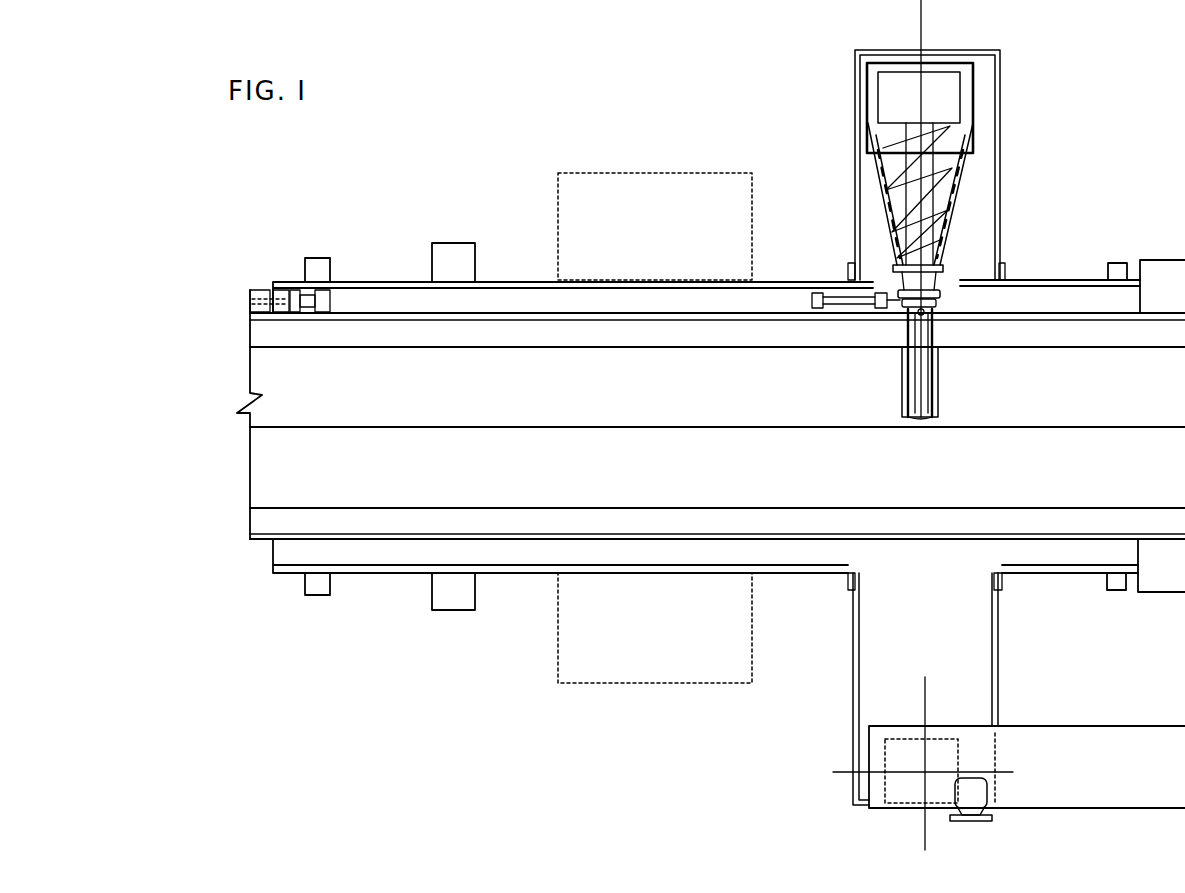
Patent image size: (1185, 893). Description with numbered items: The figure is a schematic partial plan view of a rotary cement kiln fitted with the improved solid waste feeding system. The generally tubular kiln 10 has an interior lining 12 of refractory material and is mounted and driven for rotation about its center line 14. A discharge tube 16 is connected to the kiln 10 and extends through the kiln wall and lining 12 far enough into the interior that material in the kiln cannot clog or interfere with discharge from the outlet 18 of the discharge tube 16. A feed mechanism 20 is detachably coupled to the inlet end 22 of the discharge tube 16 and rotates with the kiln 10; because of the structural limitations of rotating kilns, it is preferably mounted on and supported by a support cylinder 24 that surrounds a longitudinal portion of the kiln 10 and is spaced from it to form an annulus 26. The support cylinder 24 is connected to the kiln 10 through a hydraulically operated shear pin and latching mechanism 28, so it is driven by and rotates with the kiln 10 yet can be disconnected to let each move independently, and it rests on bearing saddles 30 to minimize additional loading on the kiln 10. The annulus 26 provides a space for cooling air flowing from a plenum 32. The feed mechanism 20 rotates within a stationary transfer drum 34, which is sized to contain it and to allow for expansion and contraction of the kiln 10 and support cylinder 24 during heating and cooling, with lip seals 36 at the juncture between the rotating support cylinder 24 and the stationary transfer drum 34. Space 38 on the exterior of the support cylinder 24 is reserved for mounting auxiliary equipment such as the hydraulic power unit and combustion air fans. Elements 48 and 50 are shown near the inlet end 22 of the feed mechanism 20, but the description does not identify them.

The kiln 10 is at (226, 560).
The interior lining 12 is at (303, 350).
The center line 14 is at (262, 428).
The discharge tube 16 is at (905, 372).
The outlet 18 is at (925, 420).
The feed mechanism 20 is at (968, 192).
The inlet end 22 is at (944, 302).
The support cylinder 24 is at (378, 282).
The annulus 26 is at (462, 309).
The shear pin and latching mechanism 28 is at (310, 310).
The bearing saddles 30 is at (316, 258).
The plenum 32 is at (1180, 306).
The transfer drum 34 is at (855, 130).
The lip seals 36 is at (848, 272).
The space 38 is at (620, 172).
The actuator rod 48 is at (935, 298).
The pivot pin 50 is at (938, 296).